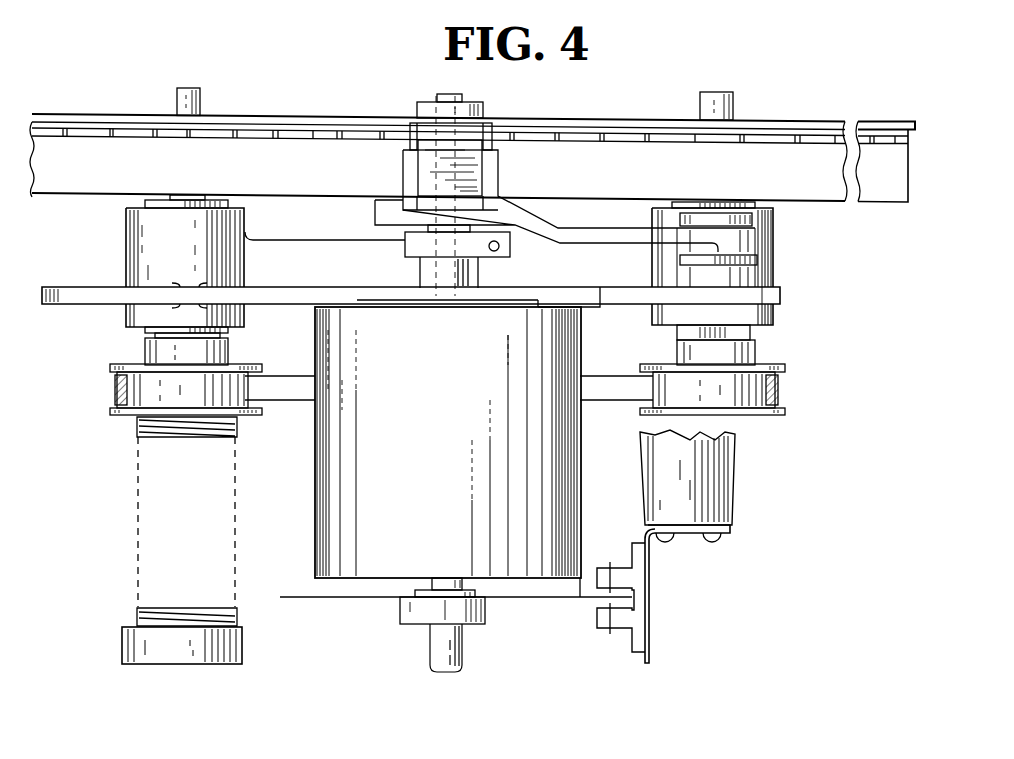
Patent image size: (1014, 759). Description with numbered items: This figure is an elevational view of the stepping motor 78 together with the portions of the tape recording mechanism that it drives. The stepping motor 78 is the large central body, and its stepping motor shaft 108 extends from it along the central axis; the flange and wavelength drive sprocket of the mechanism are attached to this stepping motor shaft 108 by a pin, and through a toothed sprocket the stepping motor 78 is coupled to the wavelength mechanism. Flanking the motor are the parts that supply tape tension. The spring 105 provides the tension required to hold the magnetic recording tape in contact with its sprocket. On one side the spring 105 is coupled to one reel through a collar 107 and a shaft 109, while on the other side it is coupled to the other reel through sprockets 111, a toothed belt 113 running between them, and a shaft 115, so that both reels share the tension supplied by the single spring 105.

The shaft 109 is at (200, 98).
The shaft 115 is at (720, 100).
The stepping motor shaft 108 is at (440, 312).
The stepping motor 78 is at (452, 458).
The sprockets 111 is at (118, 413).
The toothed belt 113 is at (278, 406).
The spring 105 is at (136, 518).
The collar 107 is at (222, 655).